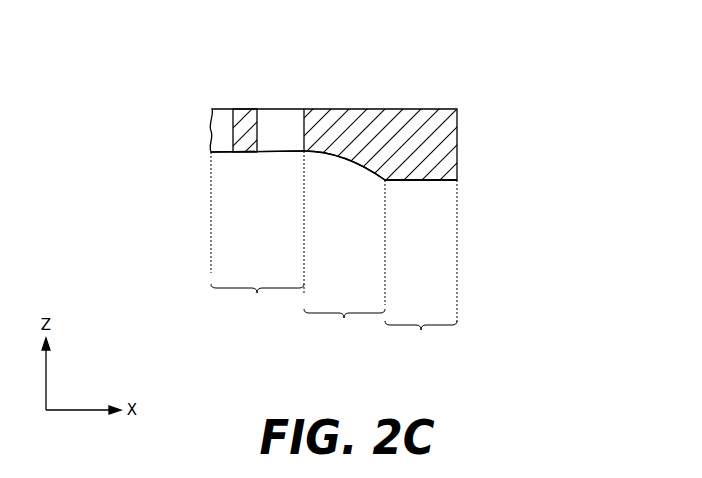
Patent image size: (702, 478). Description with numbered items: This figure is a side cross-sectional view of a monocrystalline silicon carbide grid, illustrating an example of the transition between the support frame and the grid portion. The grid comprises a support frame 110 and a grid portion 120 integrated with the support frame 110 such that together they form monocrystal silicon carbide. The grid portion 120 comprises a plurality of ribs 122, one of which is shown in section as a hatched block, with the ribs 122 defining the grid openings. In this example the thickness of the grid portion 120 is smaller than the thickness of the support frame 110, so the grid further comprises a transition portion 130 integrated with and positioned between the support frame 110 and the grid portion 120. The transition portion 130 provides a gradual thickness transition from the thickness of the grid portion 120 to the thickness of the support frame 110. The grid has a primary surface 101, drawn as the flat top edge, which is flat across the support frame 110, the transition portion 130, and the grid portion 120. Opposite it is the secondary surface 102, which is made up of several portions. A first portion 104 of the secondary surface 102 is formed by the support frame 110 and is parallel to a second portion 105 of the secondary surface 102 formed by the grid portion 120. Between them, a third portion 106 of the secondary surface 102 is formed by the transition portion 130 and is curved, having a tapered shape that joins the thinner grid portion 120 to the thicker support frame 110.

The primary surface 101 is at (437, 108).
The secondary surface 102 is at (442, 182).
The first portion of secondary surface 104 is at (413, 182).
The second portion of secondary surface 105 is at (243, 153).
The third portion of secondary surface 106 is at (342, 162).
The support frame 110 is at (421, 277).
The grid portion 120 is at (257, 244).
The rib 122 is at (247, 108).
The transition portion 130 is at (344, 271).